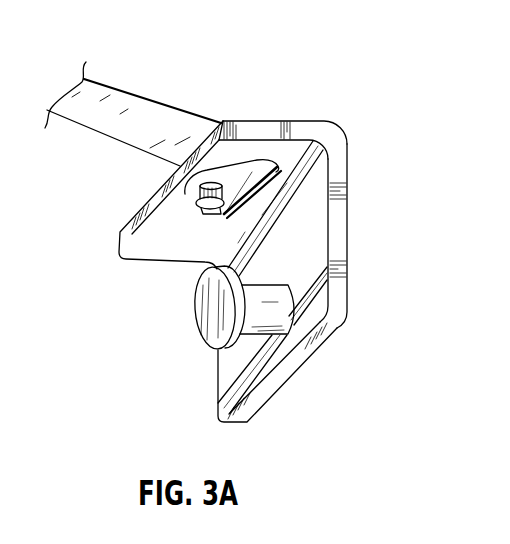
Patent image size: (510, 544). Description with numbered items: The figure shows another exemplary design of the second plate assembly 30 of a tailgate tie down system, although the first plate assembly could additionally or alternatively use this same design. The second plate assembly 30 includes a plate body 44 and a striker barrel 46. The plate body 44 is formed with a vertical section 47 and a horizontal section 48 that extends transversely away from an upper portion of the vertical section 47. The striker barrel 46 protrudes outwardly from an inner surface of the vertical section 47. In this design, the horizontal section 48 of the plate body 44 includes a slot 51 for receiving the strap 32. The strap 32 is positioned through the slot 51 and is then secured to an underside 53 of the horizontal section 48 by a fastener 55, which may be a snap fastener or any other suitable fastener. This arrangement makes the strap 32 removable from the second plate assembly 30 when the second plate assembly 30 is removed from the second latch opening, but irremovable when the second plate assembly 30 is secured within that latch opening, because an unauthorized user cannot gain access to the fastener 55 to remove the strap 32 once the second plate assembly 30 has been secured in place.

The second plate assembly 30 is at (318, 95).
The strap 32 is at (123, 126).
The plate body 44 is at (360, 184).
The striker barrel 46 is at (258, 340).
The vertical section 47 is at (233, 357).
The horizontal section 48 is at (270, 147).
The slot 51 is at (268, 170).
The underside 53 is at (133, 259).
The fastener 55 is at (204, 211).